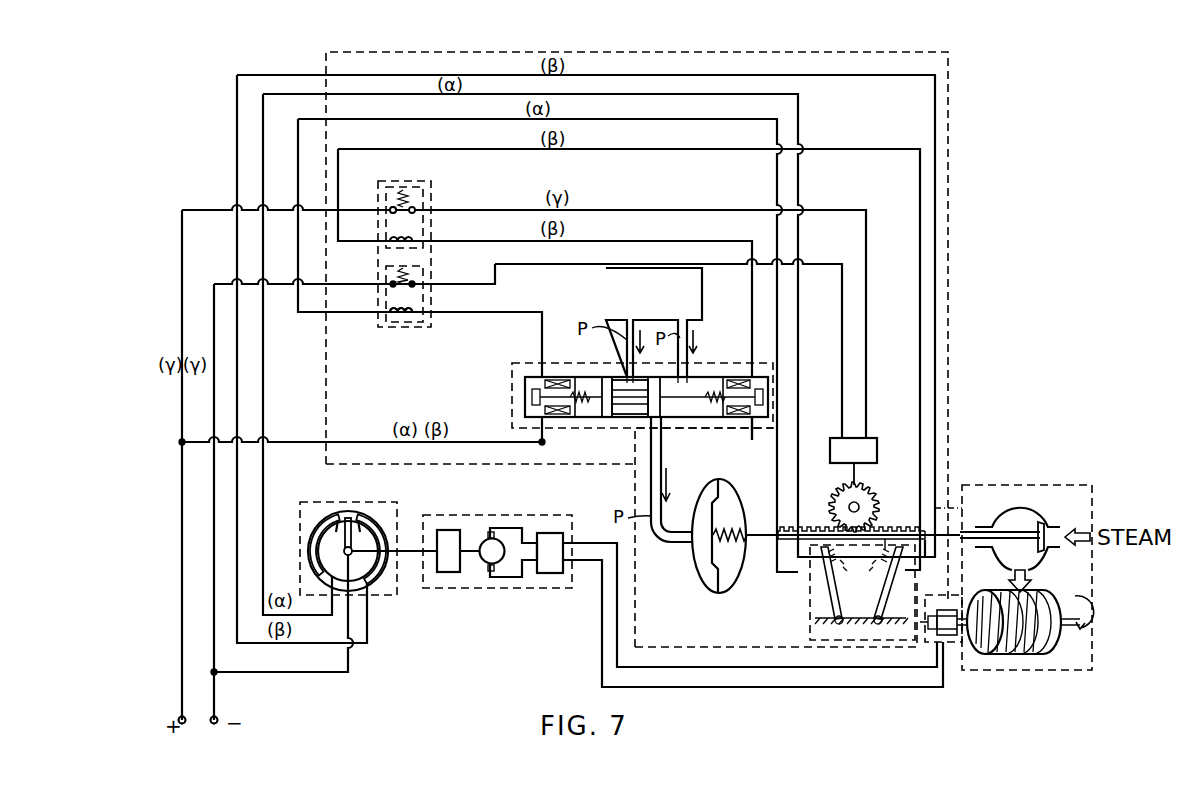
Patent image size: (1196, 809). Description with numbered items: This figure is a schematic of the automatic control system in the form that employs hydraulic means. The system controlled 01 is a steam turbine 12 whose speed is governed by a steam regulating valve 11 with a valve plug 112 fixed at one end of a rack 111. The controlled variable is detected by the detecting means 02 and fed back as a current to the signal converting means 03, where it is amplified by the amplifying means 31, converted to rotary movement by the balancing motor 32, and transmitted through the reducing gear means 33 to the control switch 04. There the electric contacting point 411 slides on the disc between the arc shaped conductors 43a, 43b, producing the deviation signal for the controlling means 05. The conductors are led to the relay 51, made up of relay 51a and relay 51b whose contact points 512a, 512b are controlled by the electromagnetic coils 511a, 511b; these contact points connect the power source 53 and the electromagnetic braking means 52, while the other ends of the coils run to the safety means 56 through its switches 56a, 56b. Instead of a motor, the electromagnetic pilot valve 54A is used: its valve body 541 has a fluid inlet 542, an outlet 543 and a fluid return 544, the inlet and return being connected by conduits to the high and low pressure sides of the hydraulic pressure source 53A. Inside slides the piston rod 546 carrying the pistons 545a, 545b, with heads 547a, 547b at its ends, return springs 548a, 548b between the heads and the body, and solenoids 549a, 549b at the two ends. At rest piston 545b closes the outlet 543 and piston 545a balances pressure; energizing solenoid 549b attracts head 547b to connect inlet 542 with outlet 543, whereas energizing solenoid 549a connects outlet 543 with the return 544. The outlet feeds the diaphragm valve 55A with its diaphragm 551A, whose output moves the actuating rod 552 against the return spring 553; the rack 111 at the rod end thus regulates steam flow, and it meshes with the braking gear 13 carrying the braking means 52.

The controlling means 05 is at (766, 60).
The relay 51 is at (420, 181).
The relay 51b is at (410, 205).
The contact point 512b is at (392, 206).
The electromagnetic coil 511b is at (418, 237).
The contact point 512a is at (413, 291).
The relay 51a is at (393, 318).
The electromagnetic coil 511a is at (410, 320).
The hydraulic pressure source 53A is at (650, 268).
The electromagnetic pilot valve 54A is at (548, 377).
The solenoid 549a is at (545, 380).
The head 547a is at (532, 397).
The piston 545a is at (606, 418).
The valve body 541 is at (625, 418).
The piston 545b is at (656, 412).
The fluid inlet 542 is at (622, 377).
The fluid return 544 is at (692, 377).
The solenoid 549b is at (748, 382).
The head 547b is at (763, 397).
The return spring 548b is at (735, 377).
The return spring 548a is at (545, 418).
The piston rod 546 is at (775, 436).
The outlet 543 is at (658, 418).
The electromagnetic braking means 52 is at (878, 452).
The braking gear 13 is at (860, 497).
The diaphragm valve 55A is at (748, 496).
The diaphragm 551A is at (716, 578).
The return spring 553 is at (742, 560).
The actuating rod 552 is at (760, 530).
The rack 111 is at (814, 532).
The safety means 56 is at (822, 606).
The safety switch 56a is at (826, 583).
The safety switch 56b is at (892, 585).
The system controlled 01 is at (1028, 497).
The steam regulating valve 11 is at (1010, 520).
The valve plug 112 is at (1046, 528).
The steam turbine 12 is at (1038, 592).
The detecting means 02 is at (950, 642).
The control switch 04 is at (377, 508).
The arc shaped conductor 43a is at (318, 557).
The arc shaped conductor 43b is at (376, 526).
The electric contacting point 411 is at (336, 521).
The signal converting means 03 is at (500, 515).
The reducing gear means 33 is at (449, 574).
The balancing motor 32 is at (490, 578).
The amplifying means 31 is at (550, 575).
The power source 53 is at (202, 716).